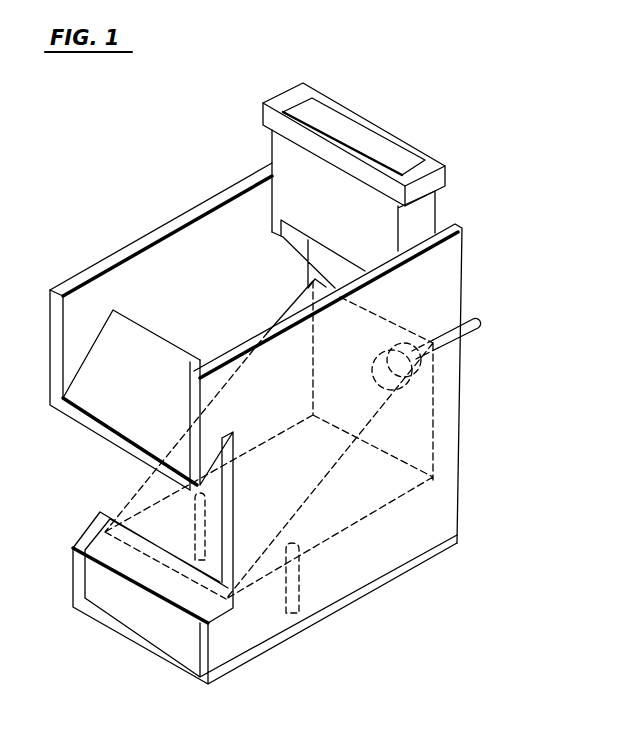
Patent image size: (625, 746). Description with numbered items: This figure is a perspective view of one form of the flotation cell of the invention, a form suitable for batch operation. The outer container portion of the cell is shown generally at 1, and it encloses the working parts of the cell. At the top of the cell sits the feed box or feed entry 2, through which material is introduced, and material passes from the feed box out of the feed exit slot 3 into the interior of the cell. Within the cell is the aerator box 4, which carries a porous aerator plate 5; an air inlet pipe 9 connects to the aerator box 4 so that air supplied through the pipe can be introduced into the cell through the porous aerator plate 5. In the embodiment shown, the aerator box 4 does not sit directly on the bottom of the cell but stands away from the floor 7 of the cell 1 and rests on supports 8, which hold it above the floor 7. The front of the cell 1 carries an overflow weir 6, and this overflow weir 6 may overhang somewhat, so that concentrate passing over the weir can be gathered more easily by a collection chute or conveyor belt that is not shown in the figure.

The outer container portion 1 is at (132, 244).
The feed box 2 is at (398, 140).
The feed exit slot 3 is at (303, 241).
The aerator box 4 is at (433, 404).
The porous aerator plate 5 is at (333, 467).
The overflow weir 6 is at (122, 380).
The floor 7 is at (248, 652).
The supports 8 is at (195, 528).
The air inlet pipe 9 is at (477, 322).